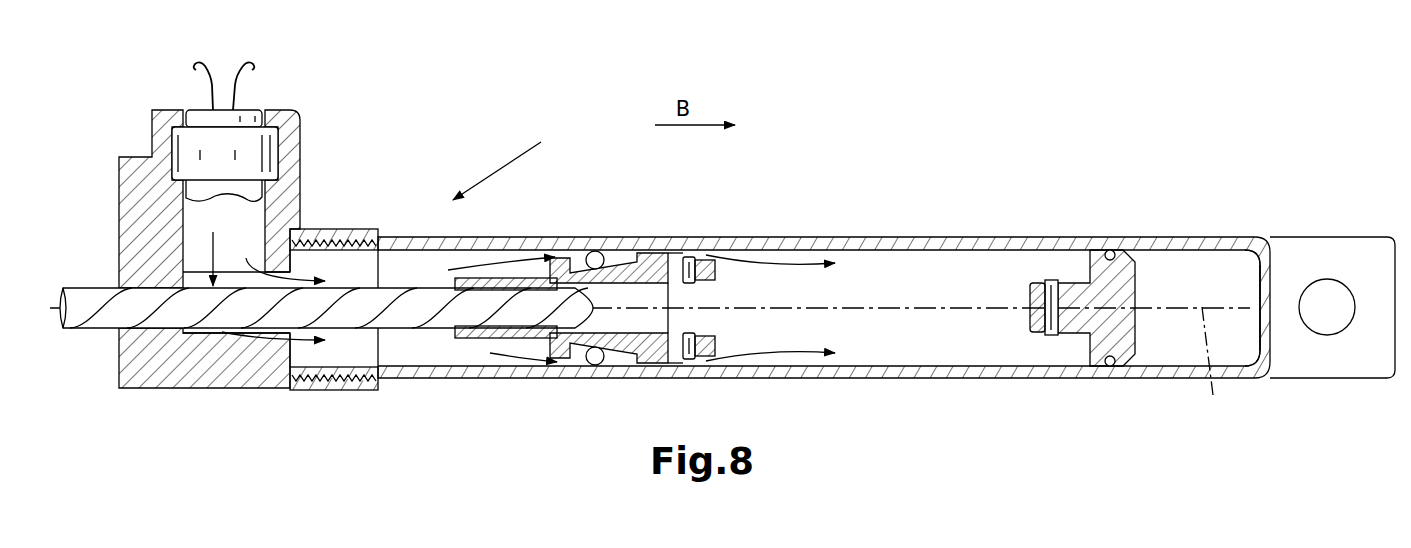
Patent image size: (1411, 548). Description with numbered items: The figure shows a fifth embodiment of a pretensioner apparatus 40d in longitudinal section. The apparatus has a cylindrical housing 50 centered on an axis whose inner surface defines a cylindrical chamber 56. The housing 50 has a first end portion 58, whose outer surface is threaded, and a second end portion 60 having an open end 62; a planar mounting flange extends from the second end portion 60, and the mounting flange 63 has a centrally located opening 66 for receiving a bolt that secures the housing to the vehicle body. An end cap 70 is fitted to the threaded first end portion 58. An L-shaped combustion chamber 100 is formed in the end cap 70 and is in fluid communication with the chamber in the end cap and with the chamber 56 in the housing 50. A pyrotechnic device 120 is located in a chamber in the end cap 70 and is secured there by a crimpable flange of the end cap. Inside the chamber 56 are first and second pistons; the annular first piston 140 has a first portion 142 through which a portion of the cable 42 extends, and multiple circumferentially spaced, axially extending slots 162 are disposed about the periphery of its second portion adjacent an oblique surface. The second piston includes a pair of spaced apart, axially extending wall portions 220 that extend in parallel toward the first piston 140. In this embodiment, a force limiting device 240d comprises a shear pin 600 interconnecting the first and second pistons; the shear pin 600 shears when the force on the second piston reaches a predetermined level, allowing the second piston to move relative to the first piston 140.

The pretensioner apparatus 40d is at (499, 157).
The cable 42 is at (77, 323).
The cylindrical housing 50 is at (731, 238).
The cylindrical chamber 56 is at (375, 265).
The first end portion 58 is at (323, 380).
The second end portion 60 is at (1262, 248).
The open end 62 is at (1268, 285).
The mounting tab 63 is at (1357, 362).
The opening 66 is at (1328, 312).
The end cap 70 is at (305, 180).
The L-shaped combustion chamber 100 is at (198, 337).
The pyrotechnic device 120 is at (248, 108).
The first piston 140 is at (502, 278).
The first portion 142 is at (470, 346).
The slots 162 is at (565, 362).
The wall portions 220 is at (1137, 278).
The force limiting device 240d is at (1062, 275).
The shear pin 600 is at (1050, 335).